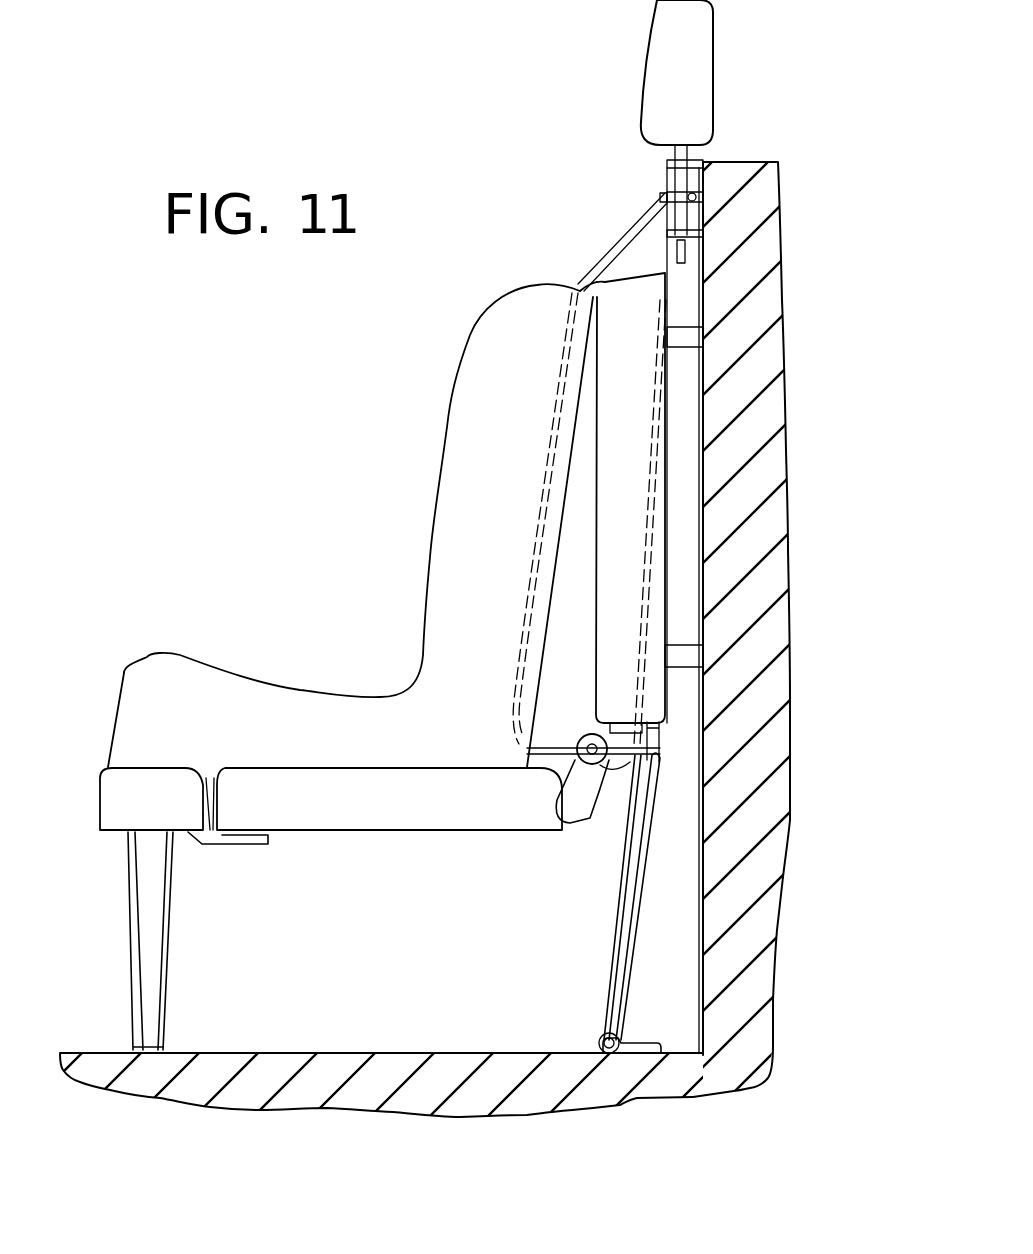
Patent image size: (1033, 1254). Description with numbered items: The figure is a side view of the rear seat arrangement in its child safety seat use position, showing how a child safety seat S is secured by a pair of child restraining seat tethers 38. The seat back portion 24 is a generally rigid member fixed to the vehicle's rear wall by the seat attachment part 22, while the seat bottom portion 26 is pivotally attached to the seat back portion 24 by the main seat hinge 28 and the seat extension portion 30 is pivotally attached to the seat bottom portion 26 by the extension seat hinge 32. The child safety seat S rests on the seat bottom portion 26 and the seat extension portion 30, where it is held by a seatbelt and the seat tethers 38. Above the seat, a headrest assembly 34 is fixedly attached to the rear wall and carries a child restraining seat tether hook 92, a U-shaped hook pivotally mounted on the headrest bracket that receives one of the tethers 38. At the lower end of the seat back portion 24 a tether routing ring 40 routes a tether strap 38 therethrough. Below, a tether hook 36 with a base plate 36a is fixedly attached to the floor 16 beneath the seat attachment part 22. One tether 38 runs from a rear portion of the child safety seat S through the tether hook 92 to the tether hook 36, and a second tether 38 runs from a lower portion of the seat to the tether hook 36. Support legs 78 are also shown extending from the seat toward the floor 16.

The floor 16 is at (292, 1050).
The seat attachment part 22 is at (676, 350).
The seat back portion 24 is at (617, 610).
The seat bottom portion 26 is at (368, 800).
The main seat hinge 28 is at (569, 738).
The seat extension portion 30 is at (130, 798).
The extension seat hinge 32 is at (213, 856).
The headrest assembly 34 is at (676, 70).
The tether hook 36 is at (597, 1040).
The base plate 36a is at (641, 1042).
The child restraining seat tethers 38 is at (632, 848).
The tether routing ring 40 is at (660, 745).
The legs 78 is at (125, 940).
The child restraining seat tether hook 92 is at (666, 196).
The child safety seat S is at (487, 463).